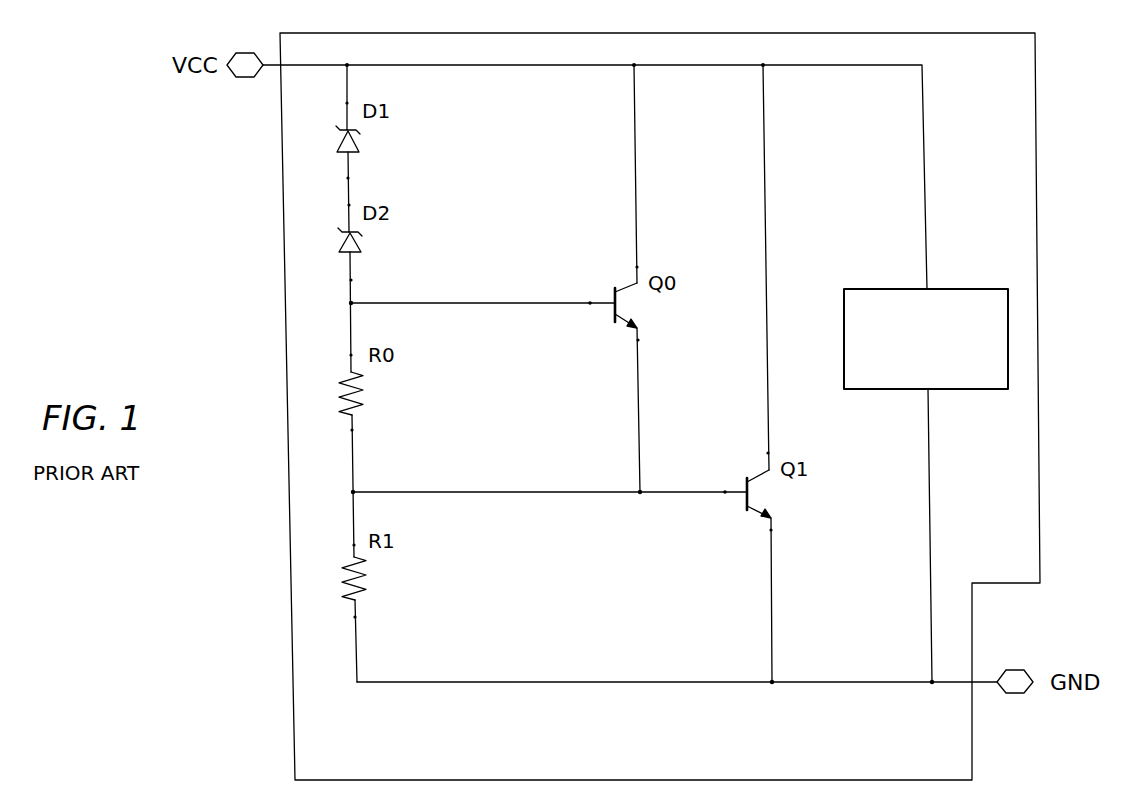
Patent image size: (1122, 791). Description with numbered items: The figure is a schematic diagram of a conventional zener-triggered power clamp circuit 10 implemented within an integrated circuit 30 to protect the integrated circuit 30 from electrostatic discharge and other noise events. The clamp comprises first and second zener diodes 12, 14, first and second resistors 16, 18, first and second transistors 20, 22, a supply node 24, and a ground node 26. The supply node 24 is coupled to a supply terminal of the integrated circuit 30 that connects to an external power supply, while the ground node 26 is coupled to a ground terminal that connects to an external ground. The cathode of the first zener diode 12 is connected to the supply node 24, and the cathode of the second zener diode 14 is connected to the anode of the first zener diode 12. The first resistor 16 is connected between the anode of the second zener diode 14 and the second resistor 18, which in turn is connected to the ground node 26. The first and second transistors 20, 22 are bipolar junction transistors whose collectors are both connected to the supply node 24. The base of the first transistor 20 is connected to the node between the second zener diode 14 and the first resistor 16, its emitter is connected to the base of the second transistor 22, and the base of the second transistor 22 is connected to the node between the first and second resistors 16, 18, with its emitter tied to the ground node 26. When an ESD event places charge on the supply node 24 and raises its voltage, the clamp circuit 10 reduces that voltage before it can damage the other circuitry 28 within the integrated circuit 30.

The zener-triggered power clamp circuit 10 is at (786, 220).
The first zener diode 12 is at (358, 149).
The second zener diode 14 is at (361, 250).
The first resistor 16 is at (360, 406).
The second resistor 18 is at (362, 591).
The first transistor 20 is at (628, 287).
The second transistor 22 is at (759, 475).
The supply node 24 is at (532, 67).
The ground node 26 is at (541, 684).
The circuitry 28 is at (902, 288).
The integrated circuit 30 is at (1036, 122).